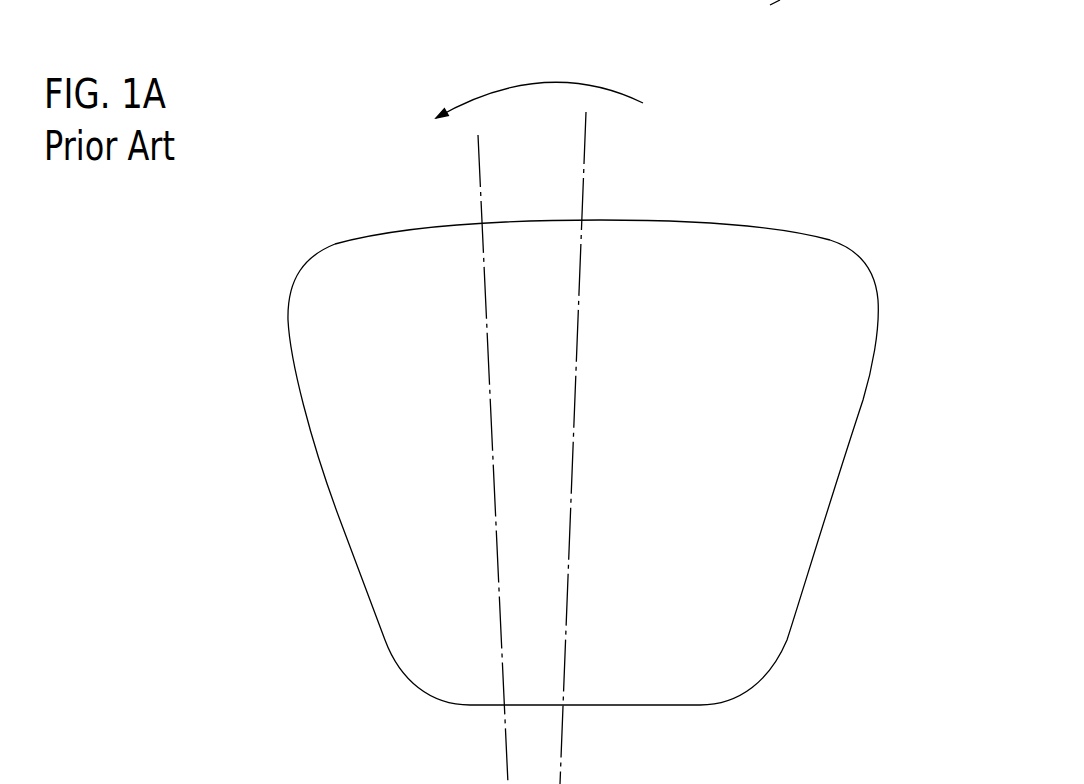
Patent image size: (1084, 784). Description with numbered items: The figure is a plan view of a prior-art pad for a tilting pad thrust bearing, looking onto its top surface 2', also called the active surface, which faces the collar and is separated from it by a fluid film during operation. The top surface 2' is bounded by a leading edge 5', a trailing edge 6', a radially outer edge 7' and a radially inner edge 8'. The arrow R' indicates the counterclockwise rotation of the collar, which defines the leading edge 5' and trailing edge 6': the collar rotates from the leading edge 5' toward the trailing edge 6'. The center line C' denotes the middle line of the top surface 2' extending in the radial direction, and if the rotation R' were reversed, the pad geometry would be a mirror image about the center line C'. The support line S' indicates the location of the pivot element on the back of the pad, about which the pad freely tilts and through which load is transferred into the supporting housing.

The top surface 2' is at (583, 459).
The leading edge 5' is at (810, 472).
The trailing edge 6' is at (358, 474).
The outer edge 7' is at (582, 205).
The inner edge 8' is at (585, 728).
The support line S' is at (506, 452).
The center line C' is at (602, 448).
The arrow indicating collar rotation R' is at (539, 81).